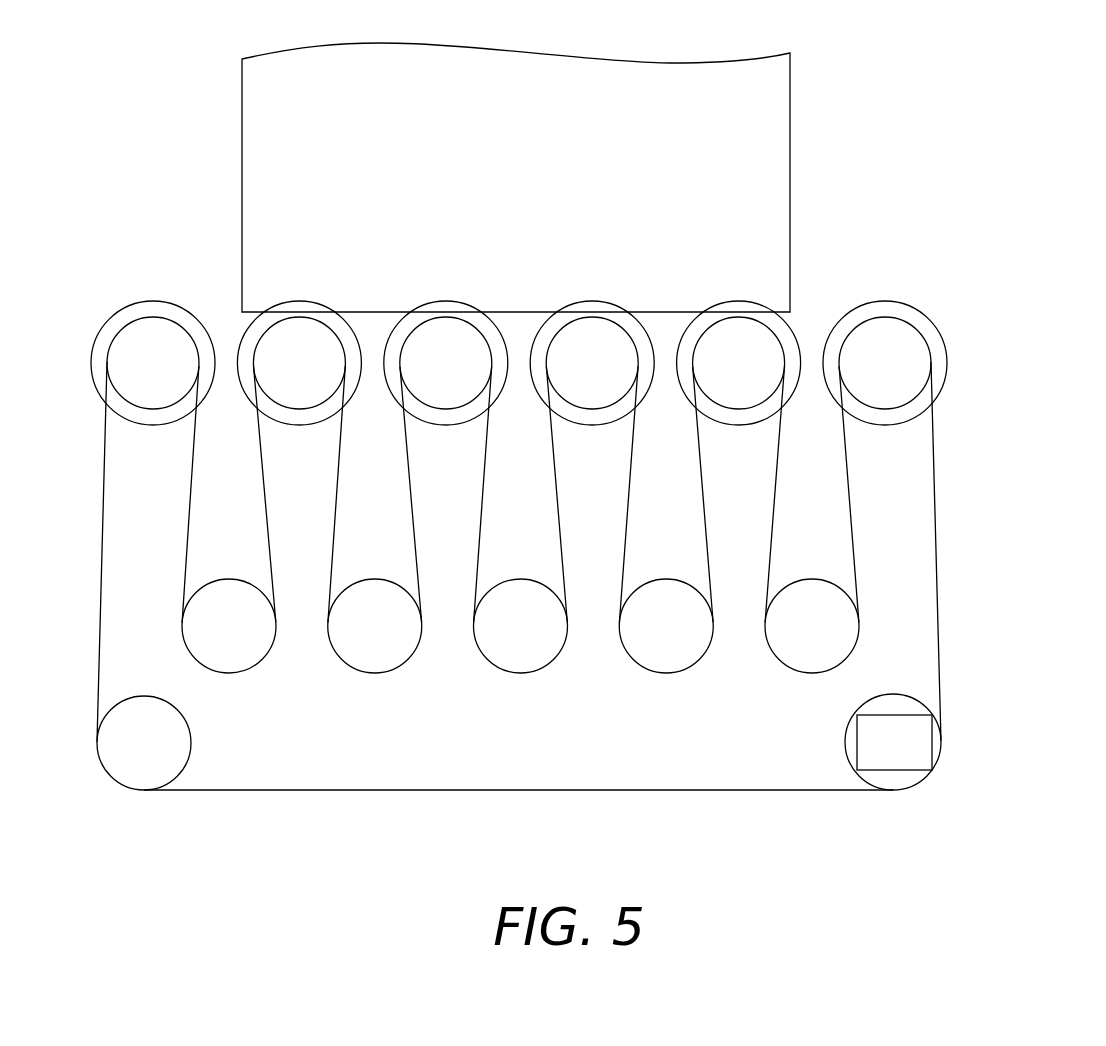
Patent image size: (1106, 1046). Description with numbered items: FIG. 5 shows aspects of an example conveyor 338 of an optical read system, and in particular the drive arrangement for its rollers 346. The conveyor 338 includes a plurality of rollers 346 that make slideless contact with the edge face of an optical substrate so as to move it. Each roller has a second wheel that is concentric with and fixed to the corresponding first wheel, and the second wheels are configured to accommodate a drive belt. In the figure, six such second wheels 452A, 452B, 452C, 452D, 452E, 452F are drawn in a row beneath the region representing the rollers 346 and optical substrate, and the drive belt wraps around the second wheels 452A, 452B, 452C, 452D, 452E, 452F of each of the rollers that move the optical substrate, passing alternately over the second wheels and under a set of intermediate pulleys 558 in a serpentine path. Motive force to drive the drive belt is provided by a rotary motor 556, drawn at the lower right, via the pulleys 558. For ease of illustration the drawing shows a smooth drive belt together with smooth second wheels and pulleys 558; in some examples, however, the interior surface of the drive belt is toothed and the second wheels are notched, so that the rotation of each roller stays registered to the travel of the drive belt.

The conveyor 338 is at (1048, 143).
The rollers 346 is at (495, 190).
The second wheel 452A is at (125, 375).
The second wheel 452B is at (271, 375).
The second wheel 452C is at (474, 375).
The second wheel 452D is at (564, 375).
The second wheel 452E is at (711, 375).
The second wheel 452F is at (858, 375).
The pulleys 558 is at (354, 637).
The rotary motor 556 is at (872, 754).